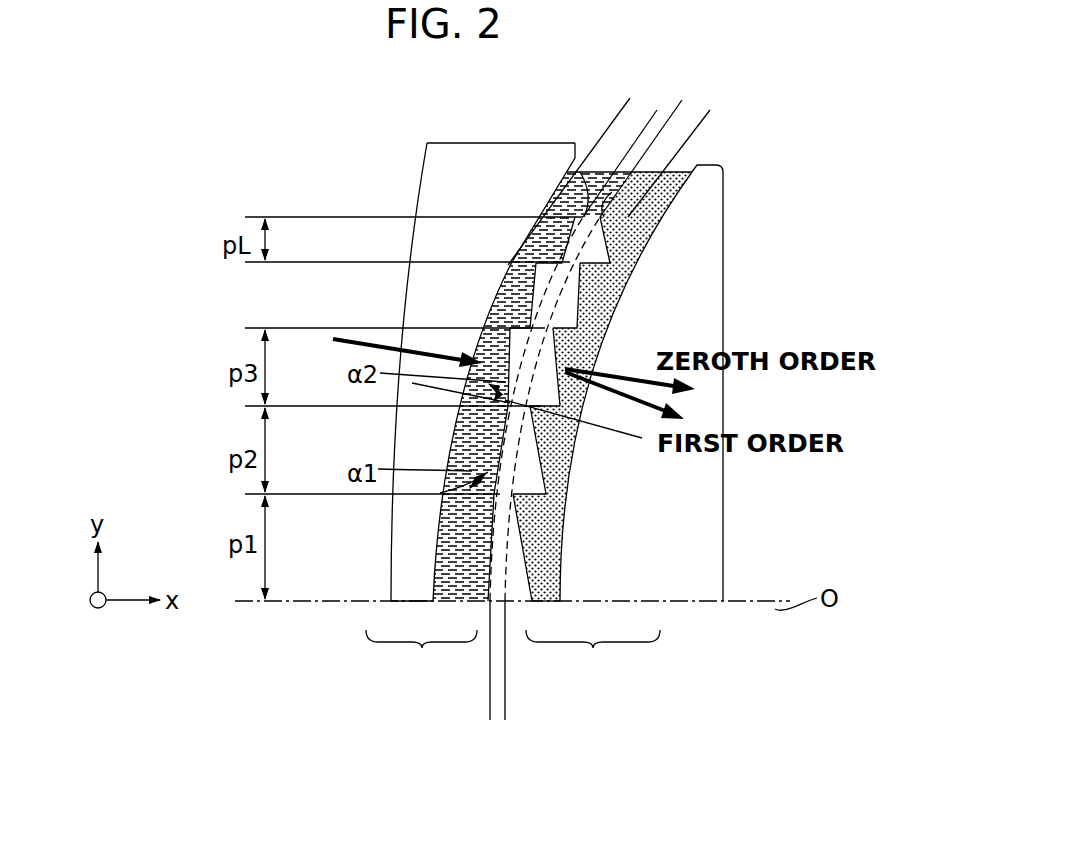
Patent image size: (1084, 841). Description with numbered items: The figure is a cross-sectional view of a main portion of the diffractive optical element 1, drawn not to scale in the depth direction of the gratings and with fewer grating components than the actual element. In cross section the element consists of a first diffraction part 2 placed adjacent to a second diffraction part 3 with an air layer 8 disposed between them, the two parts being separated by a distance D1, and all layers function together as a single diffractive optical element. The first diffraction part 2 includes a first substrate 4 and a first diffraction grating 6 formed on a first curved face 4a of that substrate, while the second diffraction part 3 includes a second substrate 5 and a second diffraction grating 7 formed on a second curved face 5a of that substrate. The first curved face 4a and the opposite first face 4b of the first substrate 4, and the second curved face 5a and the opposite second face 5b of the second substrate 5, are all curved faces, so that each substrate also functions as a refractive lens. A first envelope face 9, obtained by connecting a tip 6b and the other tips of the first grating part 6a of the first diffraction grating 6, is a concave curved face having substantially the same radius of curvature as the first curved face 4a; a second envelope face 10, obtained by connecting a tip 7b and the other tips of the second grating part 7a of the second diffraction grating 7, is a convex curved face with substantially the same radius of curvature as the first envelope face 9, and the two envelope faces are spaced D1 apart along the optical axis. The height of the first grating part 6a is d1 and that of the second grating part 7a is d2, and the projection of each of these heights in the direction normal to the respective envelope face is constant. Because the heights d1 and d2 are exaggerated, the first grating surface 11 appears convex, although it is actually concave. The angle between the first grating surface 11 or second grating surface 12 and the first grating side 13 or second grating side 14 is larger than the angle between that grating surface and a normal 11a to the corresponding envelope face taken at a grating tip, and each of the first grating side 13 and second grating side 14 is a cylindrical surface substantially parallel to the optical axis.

The diffractive optical element 1 is at (785, 102).
The first diffraction part 2 is at (421, 656).
The second diffraction part 3 is at (593, 656).
The first substrate 4 is at (415, 240).
The first curved face 4a is at (433, 584).
The opposite first face 4b is at (422, 178).
The second substrate 5 is at (706, 276).
The second curved face 5a is at (560, 573).
The opposite second face 5b is at (726, 407).
The first diffraction grating 6 is at (522, 240).
The first grating part 6a is at (560, 200).
The tip 6b is at (590, 172).
The second diffraction grating 7 is at (655, 230).
The second grating part 7a is at (640, 246).
The tip 7b is at (655, 200).
The air layer 8 is at (567, 228).
The first envelope face 9 is at (545, 293).
The second envelope face 10 is at (585, 308).
The first grating surface 11 is at (470, 440).
The normal 11a is at (618, 433).
The second grating surface 12 is at (567, 472).
The first grating side 13 is at (486, 472).
The second grating side 14 is at (515, 497).
The distance D1 is at (533, 698).
The height of first grating part d1 is at (671, 131).
The height of second grating part d2 is at (655, 80).